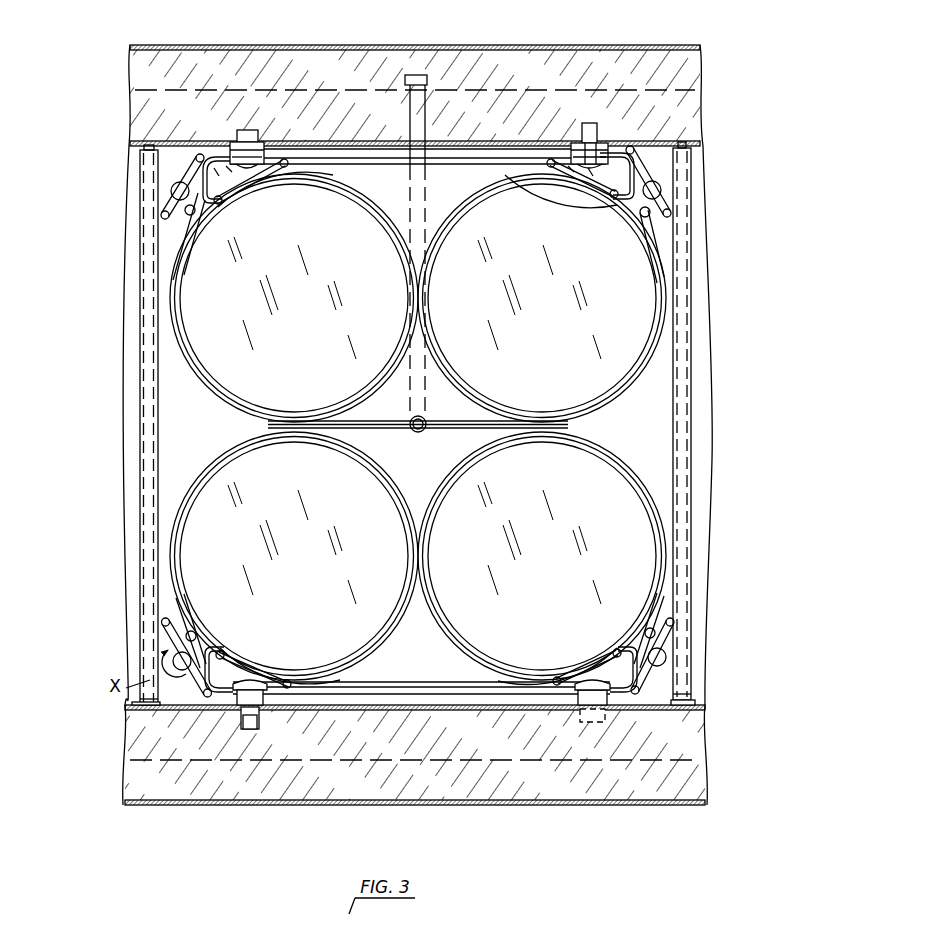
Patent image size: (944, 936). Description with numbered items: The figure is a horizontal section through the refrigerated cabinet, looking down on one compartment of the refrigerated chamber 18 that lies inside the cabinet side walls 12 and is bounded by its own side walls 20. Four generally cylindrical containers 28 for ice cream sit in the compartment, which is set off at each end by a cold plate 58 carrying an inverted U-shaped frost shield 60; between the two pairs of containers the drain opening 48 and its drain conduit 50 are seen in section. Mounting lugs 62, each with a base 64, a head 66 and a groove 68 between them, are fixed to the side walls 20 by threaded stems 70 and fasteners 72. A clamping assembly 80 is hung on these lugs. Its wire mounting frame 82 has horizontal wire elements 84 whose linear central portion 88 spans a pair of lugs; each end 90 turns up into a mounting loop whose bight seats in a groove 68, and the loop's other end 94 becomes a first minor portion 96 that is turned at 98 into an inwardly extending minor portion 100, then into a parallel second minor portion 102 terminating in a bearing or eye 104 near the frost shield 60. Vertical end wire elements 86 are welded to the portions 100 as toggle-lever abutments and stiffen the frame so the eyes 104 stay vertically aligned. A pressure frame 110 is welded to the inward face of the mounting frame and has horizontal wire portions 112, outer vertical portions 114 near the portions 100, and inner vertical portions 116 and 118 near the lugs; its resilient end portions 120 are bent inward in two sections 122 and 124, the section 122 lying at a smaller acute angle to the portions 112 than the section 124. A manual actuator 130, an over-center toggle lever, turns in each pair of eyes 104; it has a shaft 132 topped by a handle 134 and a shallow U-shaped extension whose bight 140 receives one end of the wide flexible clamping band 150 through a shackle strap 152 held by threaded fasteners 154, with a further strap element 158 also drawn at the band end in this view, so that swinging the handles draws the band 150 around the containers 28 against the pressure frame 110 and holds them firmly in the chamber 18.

The side walls 12 is at (165, 44).
The refrigerated chamber 18 is at (662, 396).
The side walls 20 is at (131, 132).
The cylindrical containers 28 is at (455, 484).
The drain opening 48 is at (421, 418).
The drain conduit 50 is at (427, 206).
The cold plate 58 is at (138, 703).
The frost shield 60 is at (692, 278).
The mounting lugs 62 is at (572, 151).
The base 64 is at (240, 702).
The head 66 is at (255, 682).
The groove 68 is at (262, 712).
The threaded stems 70 is at (256, 730).
The fasteners 72 is at (262, 730).
The clamping assembly 80 is at (166, 277).
The wire mounting frame 82 is at (343, 701).
The horizontal wire element 84 is at (455, 696).
The vertical end wire elements 86 is at (206, 201).
The linear central portion 88 is at (450, 690).
The end 90 is at (579, 151).
The end 94 is at (600, 152).
The first minor portion 96 is at (228, 170).
The turn 98 is at (210, 163).
The inwardly extending minor portion 100 is at (613, 196).
The second minor portion 102 is at (631, 222).
The bearings 104 is at (171, 198).
The pressure frame 110 is at (361, 170).
The horizontal wire portions 112 is at (355, 161).
The outer vertical wire portions 114 is at (240, 201).
The inner vertical wire portion 116 is at (282, 169).
The inner vertical wire portion 118 is at (549, 168).
The end portions 120 is at (252, 189).
The section 122 is at (291, 682).
The section 124 is at (259, 672).
The manual actuator 130 is at (667, 640).
The shaft 132 is at (166, 673).
The handle 134 is at (178, 186).
The bight 140 is at (170, 655).
The clamping band 150 is at (665, 226).
The shackle strap 152 is at (194, 221).
The threaded fasteners 154 is at (652, 251).
The strap end 158 is at (662, 233).